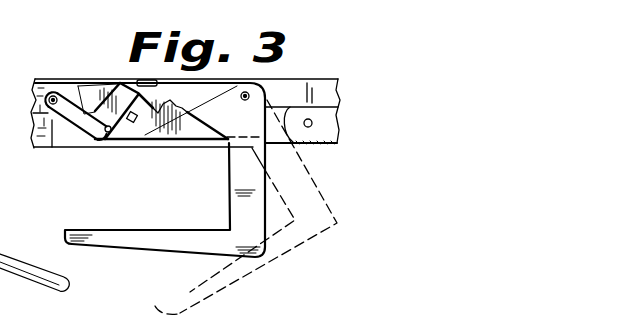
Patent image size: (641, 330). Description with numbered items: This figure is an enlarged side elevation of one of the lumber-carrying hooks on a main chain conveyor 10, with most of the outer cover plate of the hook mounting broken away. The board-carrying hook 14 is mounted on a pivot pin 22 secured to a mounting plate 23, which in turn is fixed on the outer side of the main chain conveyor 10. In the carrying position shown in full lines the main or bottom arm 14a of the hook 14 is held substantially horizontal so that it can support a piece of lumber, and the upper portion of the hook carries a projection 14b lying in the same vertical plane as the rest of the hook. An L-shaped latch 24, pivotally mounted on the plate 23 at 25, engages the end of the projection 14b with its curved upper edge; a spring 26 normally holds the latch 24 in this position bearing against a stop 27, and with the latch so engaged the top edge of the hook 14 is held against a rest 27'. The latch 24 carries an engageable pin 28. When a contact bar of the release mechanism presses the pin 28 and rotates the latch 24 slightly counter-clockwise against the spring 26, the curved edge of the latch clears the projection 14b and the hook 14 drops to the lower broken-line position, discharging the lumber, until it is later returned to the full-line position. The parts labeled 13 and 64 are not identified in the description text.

The main chain conveyor 10 is at (328, 122).
The housing 13 is at (323, 92).
The board-carrying hook 14 is at (250, 199).
The bottom arm 14a is at (163, 243).
The projection 14b is at (198, 98).
The pivot pin 22 is at (246, 93).
The mounting plate 23 is at (205, 132).
The L-shaped latch 24 is at (125, 140).
The latch pivot 25 is at (88, 140).
The spring 26 is at (115, 138).
The stop 27 is at (143, 144).
The rest 27' is at (117, 66).
The engageable pin 28 is at (50, 97).
The rod 64 is at (0, 243).